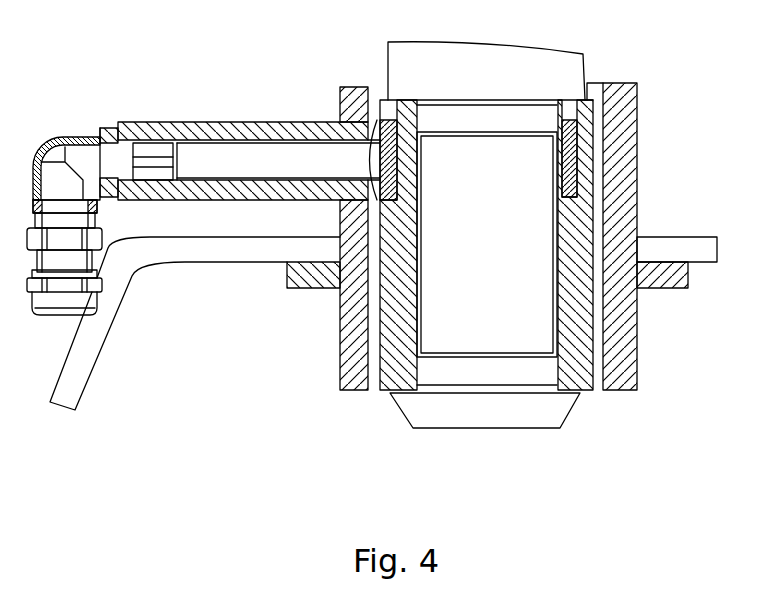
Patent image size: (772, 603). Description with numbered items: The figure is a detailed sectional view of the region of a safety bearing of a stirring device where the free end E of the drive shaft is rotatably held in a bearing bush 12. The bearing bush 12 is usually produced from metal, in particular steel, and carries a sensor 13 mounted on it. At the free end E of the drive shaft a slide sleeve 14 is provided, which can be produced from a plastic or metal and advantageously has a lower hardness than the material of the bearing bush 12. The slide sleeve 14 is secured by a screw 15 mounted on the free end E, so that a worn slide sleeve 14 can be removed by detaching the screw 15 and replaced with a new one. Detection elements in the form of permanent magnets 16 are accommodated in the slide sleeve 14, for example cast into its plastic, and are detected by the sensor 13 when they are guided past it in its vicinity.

The bearing bush 12 is at (622, 200).
The sensor 13 is at (240, 124).
The slide sleeve 14 is at (403, 382).
The screw 15 is at (557, 418).
The permanent magnets 16 is at (396, 138).
The free end of the drive shaft E is at (575, 60).